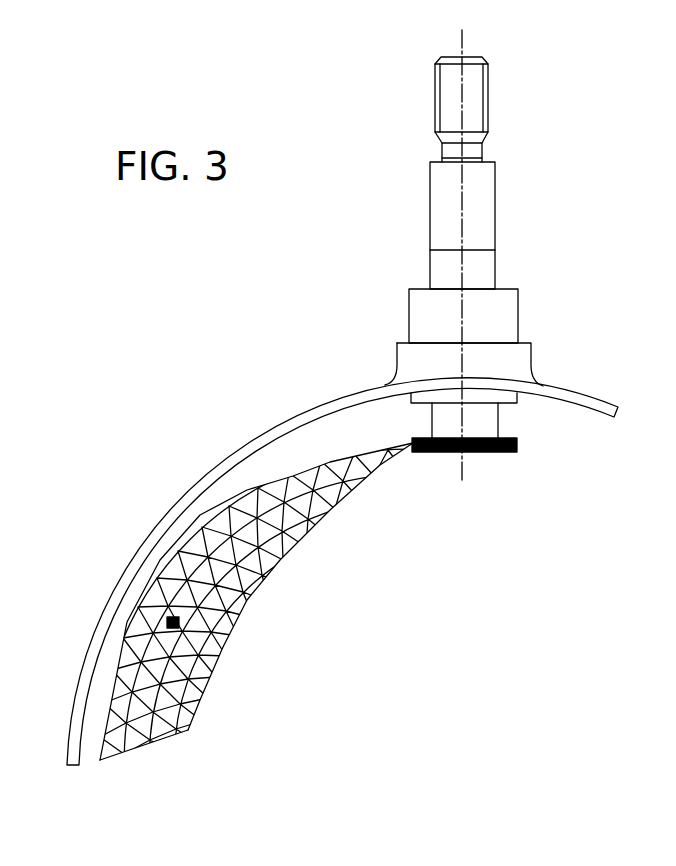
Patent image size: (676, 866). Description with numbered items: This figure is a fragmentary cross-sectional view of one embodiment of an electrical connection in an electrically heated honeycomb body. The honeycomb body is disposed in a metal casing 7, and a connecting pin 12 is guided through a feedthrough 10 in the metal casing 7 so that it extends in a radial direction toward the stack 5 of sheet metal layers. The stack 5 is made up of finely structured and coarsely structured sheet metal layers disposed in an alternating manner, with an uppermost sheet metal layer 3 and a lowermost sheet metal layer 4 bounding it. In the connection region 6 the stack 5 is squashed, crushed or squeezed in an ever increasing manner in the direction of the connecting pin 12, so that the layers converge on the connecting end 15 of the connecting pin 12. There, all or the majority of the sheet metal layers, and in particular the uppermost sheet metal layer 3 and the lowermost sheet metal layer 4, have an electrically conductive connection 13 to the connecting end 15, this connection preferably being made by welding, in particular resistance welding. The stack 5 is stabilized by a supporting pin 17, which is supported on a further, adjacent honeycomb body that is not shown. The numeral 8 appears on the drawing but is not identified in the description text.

The uppermost sheet metal layer 3 is at (132, 621).
The lowermost sheet metal layer 4 is at (243, 618).
The stack 5 is at (188, 765).
The connection region 6 is at (513, 464).
The metal casing 7 is at (217, 470).
The mesh outer edge 8 is at (156, 563).
The feedthrough 10 is at (517, 312).
The connecting pin 12 is at (490, 102).
The electrically conductive connection 13 is at (443, 452).
The connecting end 15 is at (492, 420).
The supporting pin 17 is at (136, 625).